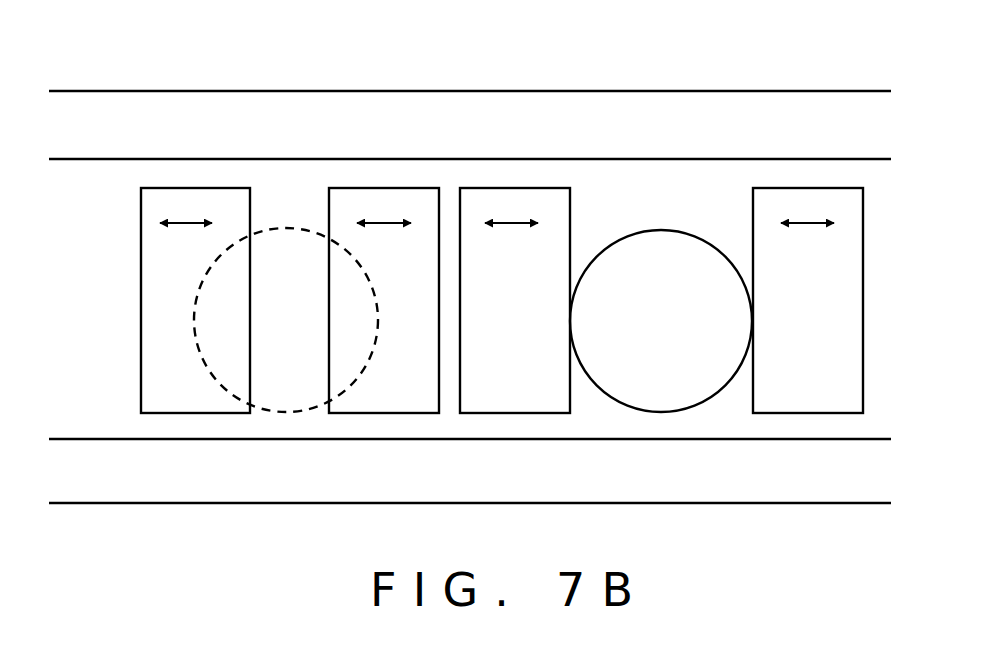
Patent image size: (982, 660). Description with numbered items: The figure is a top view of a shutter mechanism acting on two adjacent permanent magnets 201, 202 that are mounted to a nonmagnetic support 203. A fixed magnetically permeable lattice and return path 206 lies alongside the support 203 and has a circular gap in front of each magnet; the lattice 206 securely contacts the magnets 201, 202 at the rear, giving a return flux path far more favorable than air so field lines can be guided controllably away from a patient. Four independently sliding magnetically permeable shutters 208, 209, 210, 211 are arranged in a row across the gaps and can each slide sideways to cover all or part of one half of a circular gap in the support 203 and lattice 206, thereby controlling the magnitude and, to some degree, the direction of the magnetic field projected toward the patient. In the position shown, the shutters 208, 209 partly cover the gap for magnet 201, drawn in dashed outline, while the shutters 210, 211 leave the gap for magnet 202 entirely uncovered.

The magnet 201 is at (283, 412).
The magnet 202 is at (660, 412).
The nonmagnetic support 203 is at (722, 91).
The fixed magnetically permeable lattice and return path 206 is at (790, 159).
The sliding magnetically permeable shutter 208 is at (181, 191).
The sliding magnetically permeable shutter 209 is at (365, 188).
The sliding magnetically permeable shutter 210 is at (500, 188).
The sliding magnetically permeable shutter 211 is at (860, 269).